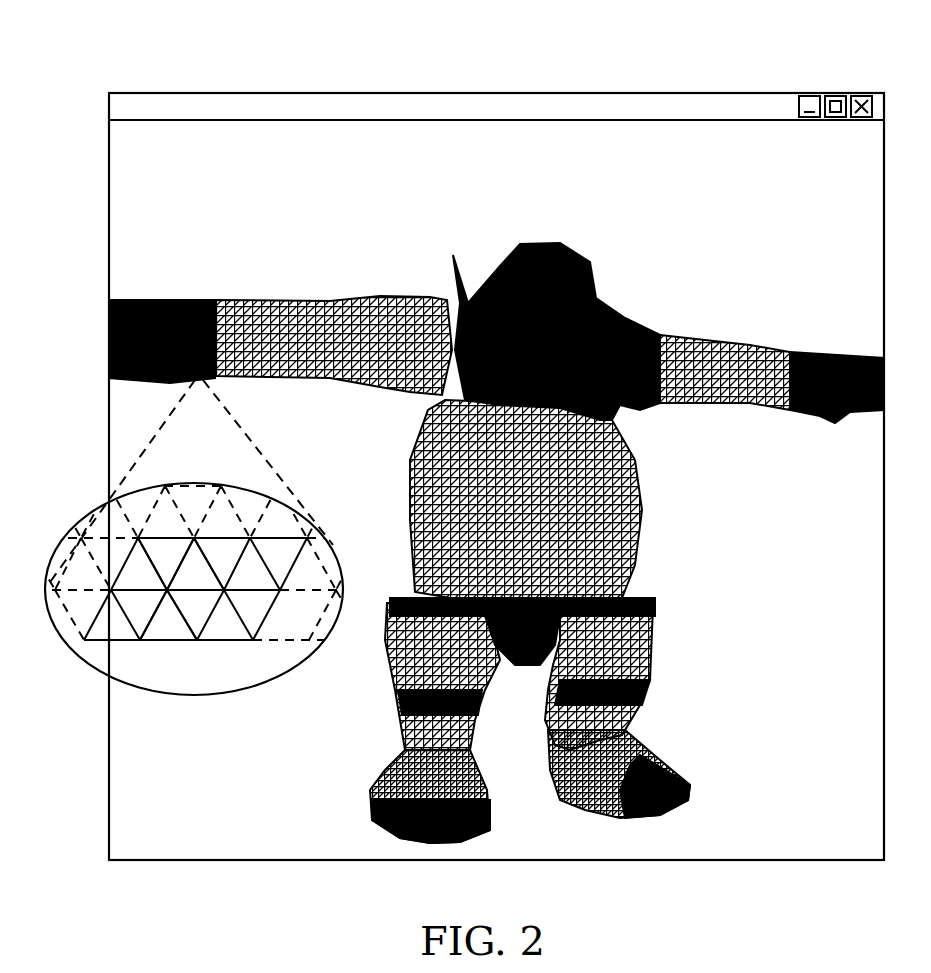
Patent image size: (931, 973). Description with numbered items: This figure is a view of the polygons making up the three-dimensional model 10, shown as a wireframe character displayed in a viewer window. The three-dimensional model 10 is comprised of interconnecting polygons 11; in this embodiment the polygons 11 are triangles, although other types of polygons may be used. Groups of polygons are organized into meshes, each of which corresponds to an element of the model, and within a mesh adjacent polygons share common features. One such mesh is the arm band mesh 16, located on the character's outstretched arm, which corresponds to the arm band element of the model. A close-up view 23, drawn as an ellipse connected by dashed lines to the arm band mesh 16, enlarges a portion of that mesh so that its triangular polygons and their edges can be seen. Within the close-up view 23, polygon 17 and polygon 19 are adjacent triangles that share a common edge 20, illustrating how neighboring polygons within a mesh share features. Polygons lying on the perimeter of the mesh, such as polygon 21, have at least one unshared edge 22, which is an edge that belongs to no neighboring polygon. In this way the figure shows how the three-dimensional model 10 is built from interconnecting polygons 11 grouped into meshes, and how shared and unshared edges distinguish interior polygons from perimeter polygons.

The 3D model 10 is at (118, 84).
The polygons 11 is at (643, 523).
The arm band mesh 16 is at (186, 298).
The polygon 17 is at (139, 537).
The polygon 19 is at (199, 549).
The common edge 20 is at (177, 566).
The polygon 21 is at (175, 629).
The unshared edge 22 is at (157, 642).
The close-up view 23 is at (54, 611).